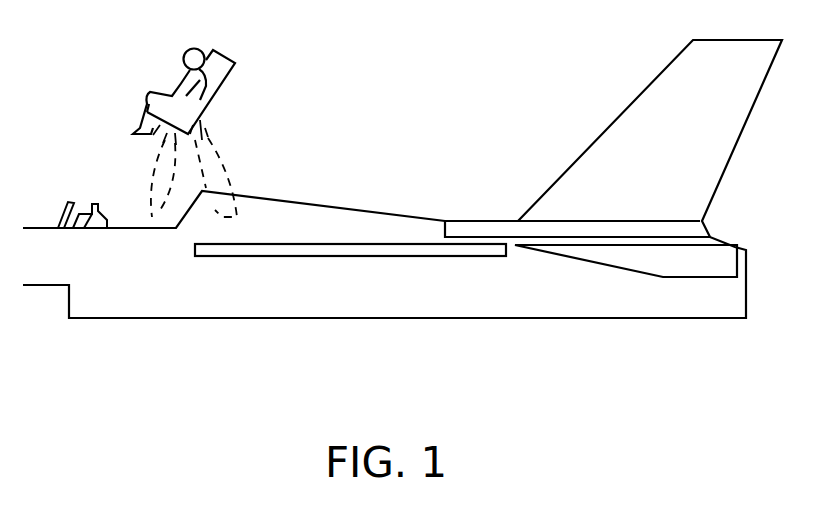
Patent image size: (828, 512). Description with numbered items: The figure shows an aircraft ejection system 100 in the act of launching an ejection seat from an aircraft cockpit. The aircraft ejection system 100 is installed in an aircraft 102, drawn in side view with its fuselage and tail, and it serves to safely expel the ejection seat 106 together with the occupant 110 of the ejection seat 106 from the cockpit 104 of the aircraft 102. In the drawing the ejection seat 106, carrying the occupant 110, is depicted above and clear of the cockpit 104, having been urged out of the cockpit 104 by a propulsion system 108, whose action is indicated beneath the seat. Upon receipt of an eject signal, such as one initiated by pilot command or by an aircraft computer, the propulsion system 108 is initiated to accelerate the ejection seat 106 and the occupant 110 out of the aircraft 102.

The aircraft ejection system 100 is at (320, 108).
The aircraft 102 is at (421, 292).
The cockpit 104 is at (115, 213).
The ejection seat 106 is at (187, 110).
The propulsion system 108 is at (207, 152).
The occupant 110 is at (185, 52).